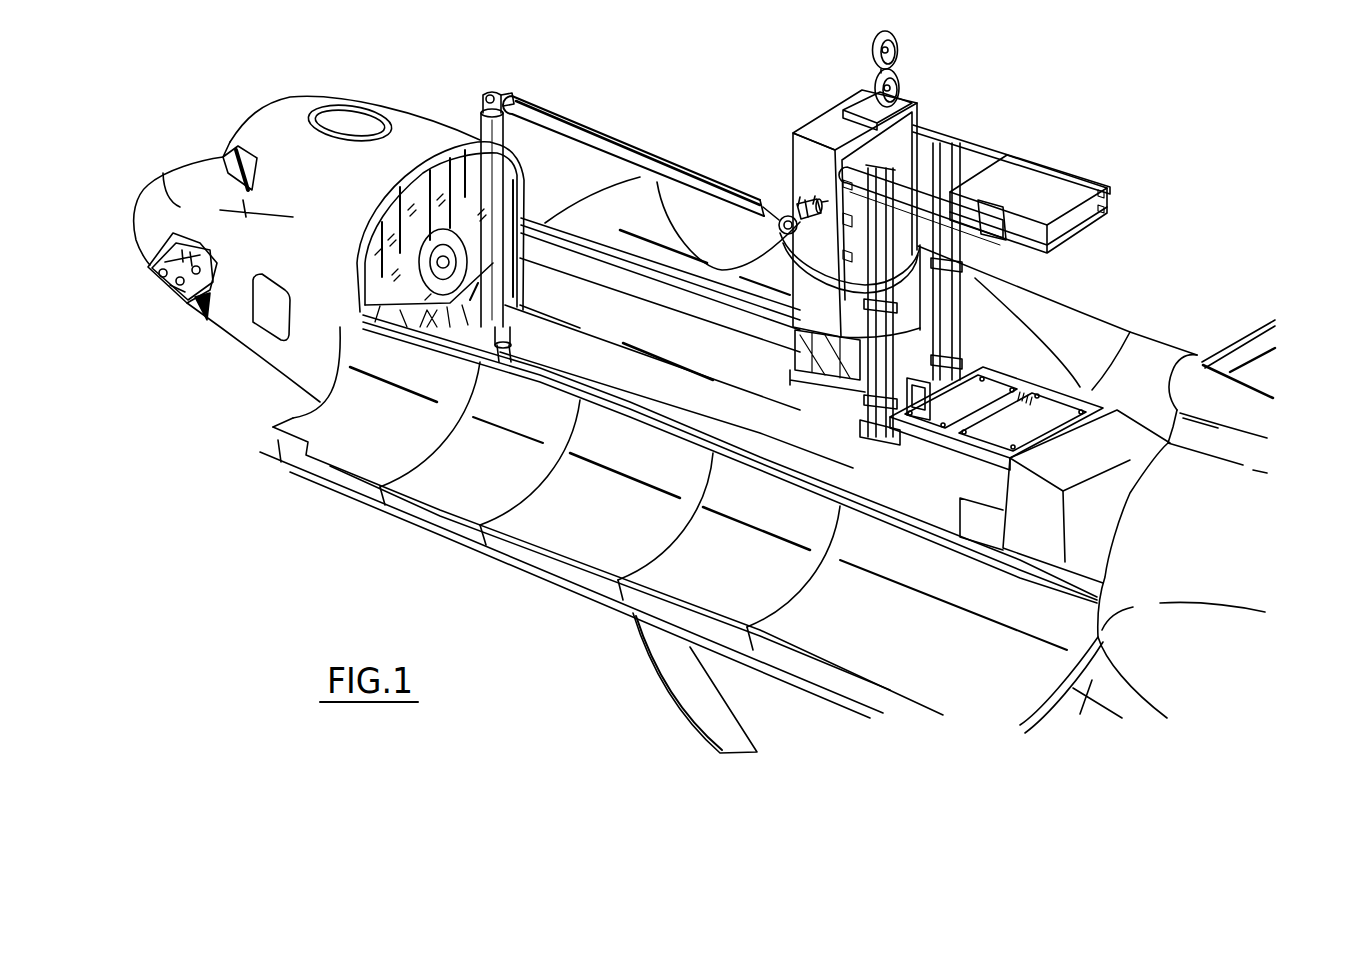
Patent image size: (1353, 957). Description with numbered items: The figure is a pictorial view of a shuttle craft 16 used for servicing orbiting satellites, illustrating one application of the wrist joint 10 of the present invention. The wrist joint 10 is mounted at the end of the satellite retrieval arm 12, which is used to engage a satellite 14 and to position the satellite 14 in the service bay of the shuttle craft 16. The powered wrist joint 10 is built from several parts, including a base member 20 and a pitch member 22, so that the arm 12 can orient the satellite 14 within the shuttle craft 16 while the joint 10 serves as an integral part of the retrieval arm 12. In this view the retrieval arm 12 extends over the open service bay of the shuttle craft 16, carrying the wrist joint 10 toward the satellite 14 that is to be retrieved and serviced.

The wrist joint 10 is at (777, 196).
The satellite retrieval arm 12 is at (568, 118).
The satellite 14 is at (832, 117).
The shuttle craft 16 is at (397, 118).
The base member 20 is at (552, 283).
The pitch member 22 is at (645, 205).